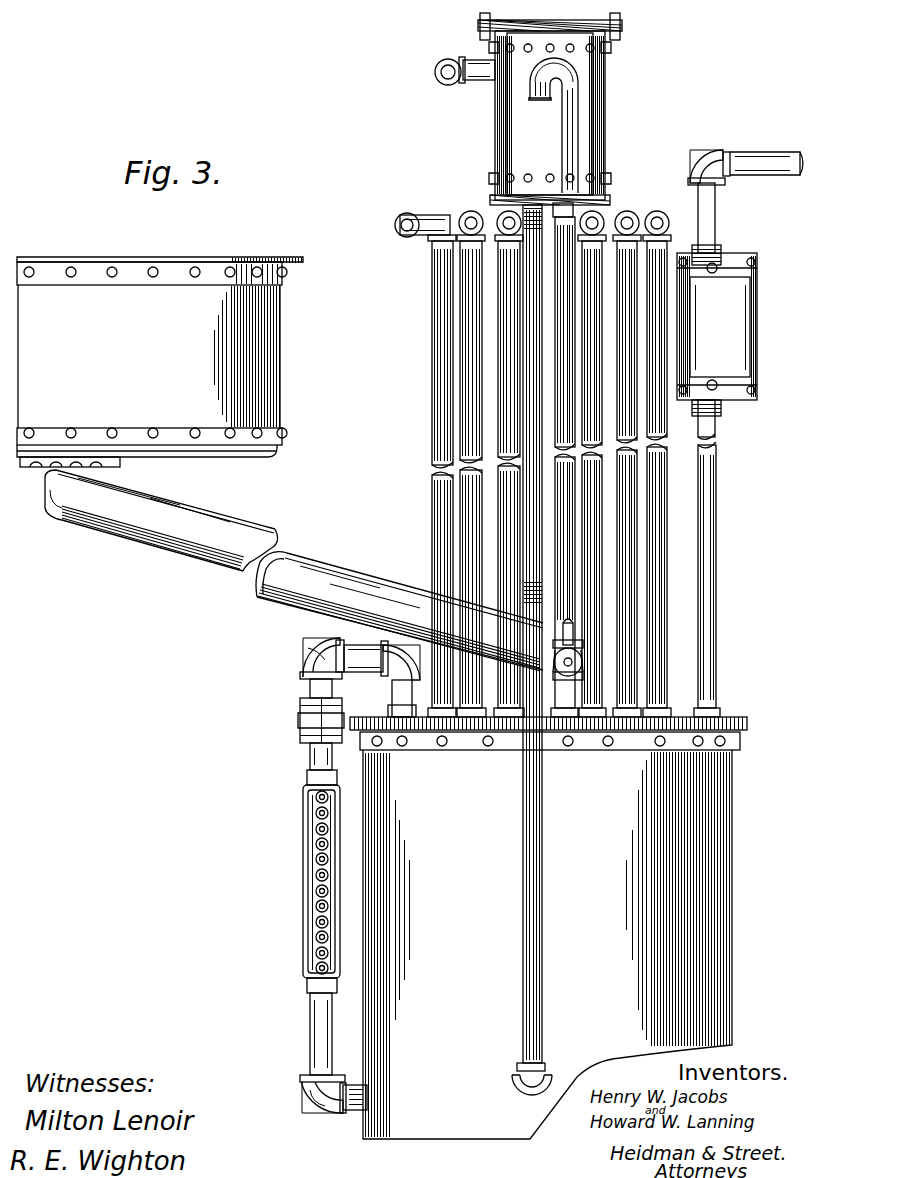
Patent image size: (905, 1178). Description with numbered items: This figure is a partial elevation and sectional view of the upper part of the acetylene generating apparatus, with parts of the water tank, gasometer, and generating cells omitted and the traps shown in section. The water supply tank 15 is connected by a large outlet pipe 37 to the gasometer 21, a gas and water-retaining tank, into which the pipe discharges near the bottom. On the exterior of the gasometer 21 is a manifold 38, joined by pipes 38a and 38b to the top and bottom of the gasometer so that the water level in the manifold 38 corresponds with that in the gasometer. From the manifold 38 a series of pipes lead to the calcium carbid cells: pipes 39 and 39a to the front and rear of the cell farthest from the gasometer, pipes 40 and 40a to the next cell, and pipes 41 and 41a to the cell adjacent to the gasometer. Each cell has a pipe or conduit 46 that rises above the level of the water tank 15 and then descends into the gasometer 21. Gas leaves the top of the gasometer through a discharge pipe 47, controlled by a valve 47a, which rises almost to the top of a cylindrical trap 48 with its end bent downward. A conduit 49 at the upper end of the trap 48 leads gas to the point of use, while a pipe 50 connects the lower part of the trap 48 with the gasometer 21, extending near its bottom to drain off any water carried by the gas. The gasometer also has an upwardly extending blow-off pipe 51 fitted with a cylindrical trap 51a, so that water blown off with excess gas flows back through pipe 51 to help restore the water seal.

The water supply tank 15 is at (160, 362).
The gasometer 21 is at (548, 928).
The outlet pipe 37 is at (152, 540).
The manifold 38 is at (276, 882).
The manifold connecting pipe 38a is at (312, 757).
The manifold connecting pipe 38b is at (350, 1112).
The pipe 39 is at (316, 797).
The pipe 39a is at (316, 968).
The pipe 40 is at (316, 829).
The pipe 40a is at (316, 953).
The pipe 41 is at (316, 876).
The pipe 41a is at (316, 891).
The pipe or conduit 46 is at (505, 377).
The discharge pipe 47 is at (575, 137).
The valve 47a is at (585, 662).
The trap 48 is at (493, 133).
The conduit 49 is at (480, 82).
The drain pipe 50 is at (530, 288).
The blow-off pipe 51 is at (717, 464).
The cylindrical trap 51a is at (740, 330).